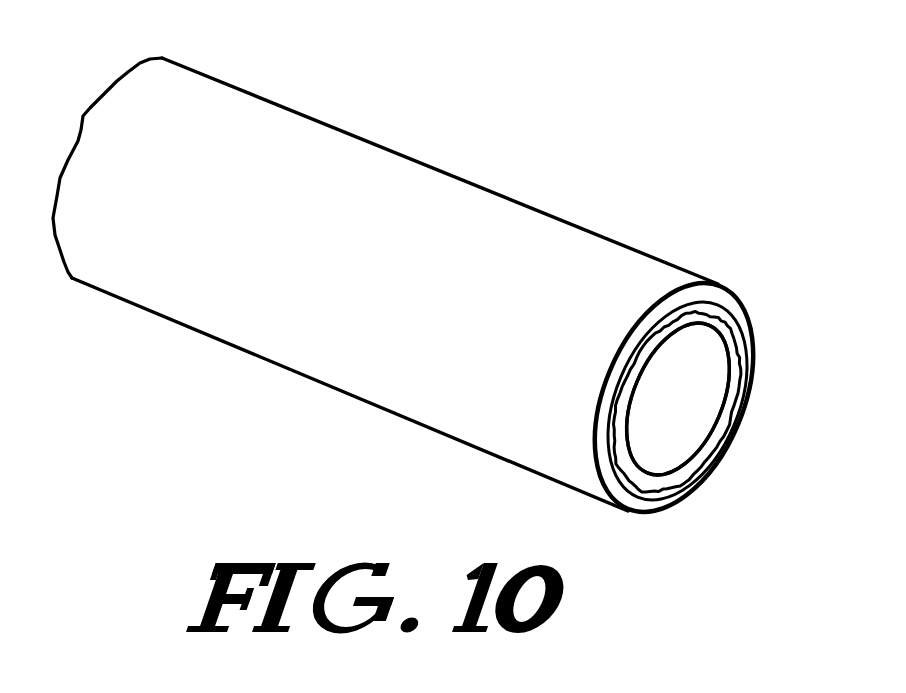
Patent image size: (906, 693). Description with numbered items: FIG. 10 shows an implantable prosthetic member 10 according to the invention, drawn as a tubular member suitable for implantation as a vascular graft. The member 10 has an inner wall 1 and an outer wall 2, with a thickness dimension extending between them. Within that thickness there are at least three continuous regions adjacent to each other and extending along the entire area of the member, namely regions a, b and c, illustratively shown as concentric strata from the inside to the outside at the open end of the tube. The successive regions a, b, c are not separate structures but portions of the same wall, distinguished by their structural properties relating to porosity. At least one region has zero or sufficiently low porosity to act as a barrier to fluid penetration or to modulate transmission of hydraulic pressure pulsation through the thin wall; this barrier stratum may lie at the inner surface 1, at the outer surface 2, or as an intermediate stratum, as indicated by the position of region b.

The implantable prosthetic member 10 is at (445, 67).
The outer wall 2 is at (338, 345).
The region a is at (727, 337).
The region b is at (742, 378).
The region c is at (727, 442).
The inner wall 1 is at (655, 443).